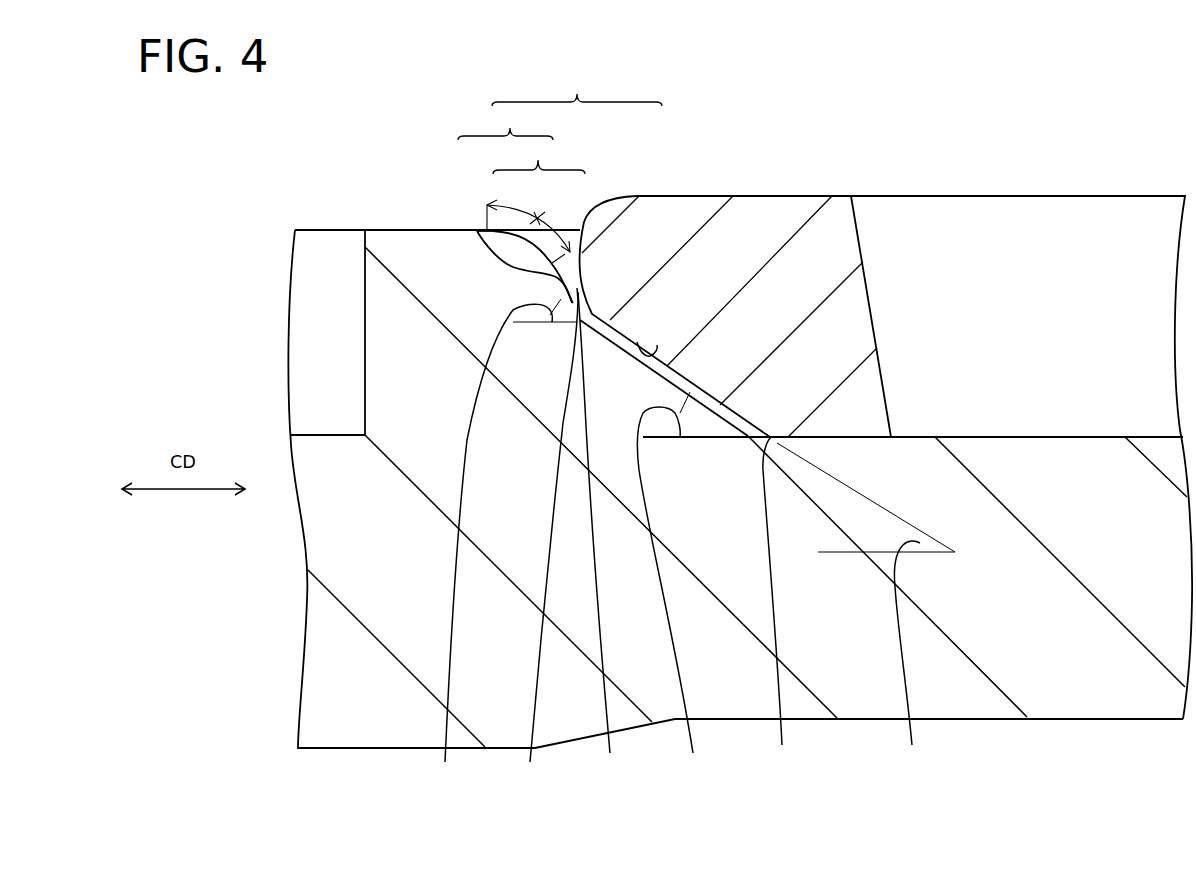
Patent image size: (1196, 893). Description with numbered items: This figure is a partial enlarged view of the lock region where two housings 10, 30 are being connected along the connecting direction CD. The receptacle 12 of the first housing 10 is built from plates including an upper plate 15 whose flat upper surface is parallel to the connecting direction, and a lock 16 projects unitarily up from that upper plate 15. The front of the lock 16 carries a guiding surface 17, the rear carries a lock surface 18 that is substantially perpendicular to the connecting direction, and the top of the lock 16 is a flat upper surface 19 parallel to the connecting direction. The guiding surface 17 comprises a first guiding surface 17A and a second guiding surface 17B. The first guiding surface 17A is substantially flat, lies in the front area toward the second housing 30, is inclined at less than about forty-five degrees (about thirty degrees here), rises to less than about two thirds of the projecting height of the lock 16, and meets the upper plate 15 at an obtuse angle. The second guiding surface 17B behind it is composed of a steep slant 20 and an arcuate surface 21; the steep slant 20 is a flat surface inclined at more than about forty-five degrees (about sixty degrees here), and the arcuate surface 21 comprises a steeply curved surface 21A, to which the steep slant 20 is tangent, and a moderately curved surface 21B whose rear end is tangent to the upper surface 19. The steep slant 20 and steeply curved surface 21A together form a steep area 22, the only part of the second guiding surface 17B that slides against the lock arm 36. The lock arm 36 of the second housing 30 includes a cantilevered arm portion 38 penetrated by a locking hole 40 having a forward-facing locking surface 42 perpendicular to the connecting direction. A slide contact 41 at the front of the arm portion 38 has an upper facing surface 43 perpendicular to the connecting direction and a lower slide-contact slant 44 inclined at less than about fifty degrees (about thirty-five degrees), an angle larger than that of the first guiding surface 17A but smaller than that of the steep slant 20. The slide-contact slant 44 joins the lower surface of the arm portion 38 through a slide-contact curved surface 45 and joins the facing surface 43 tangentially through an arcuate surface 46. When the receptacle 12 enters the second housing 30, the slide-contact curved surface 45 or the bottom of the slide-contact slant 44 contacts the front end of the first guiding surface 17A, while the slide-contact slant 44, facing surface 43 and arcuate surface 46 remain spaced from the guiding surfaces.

The first housing 10 is at (305, 194).
The receptacle 12 is at (980, 700).
The upper plate 15 is at (670, 508).
The lock 16 is at (413, 257).
The guiding surface 17 is at (577, 86).
The first guiding surface 17A is at (618, 345).
The second guiding surface 17B is at (515, 202).
The lock surface 18 is at (365, 287).
The upper surface 19 is at (443, 230).
The steep slant 20 is at (473, 231).
The arcuate surface 21 is at (536, 192).
The steeply curved surface 21A is at (562, 233).
The moderately curved surface 21B is at (512, 207).
The steep area 22 is at (561, 261).
The second housing 30 is at (1110, 143).
The lock arm 36 is at (1022, 182).
The arm portion 38 is at (1152, 193).
The locking hole 40 is at (945, 213).
The slide contact 41 is at (745, 217).
The locking surface 42 is at (858, 233).
The facing surface 43 is at (548, 541).
The slide-contact slant 44 is at (657, 347).
The slide-contact curved surface 45 is at (777, 601).
The arcuate surface 46 is at (599, 537).